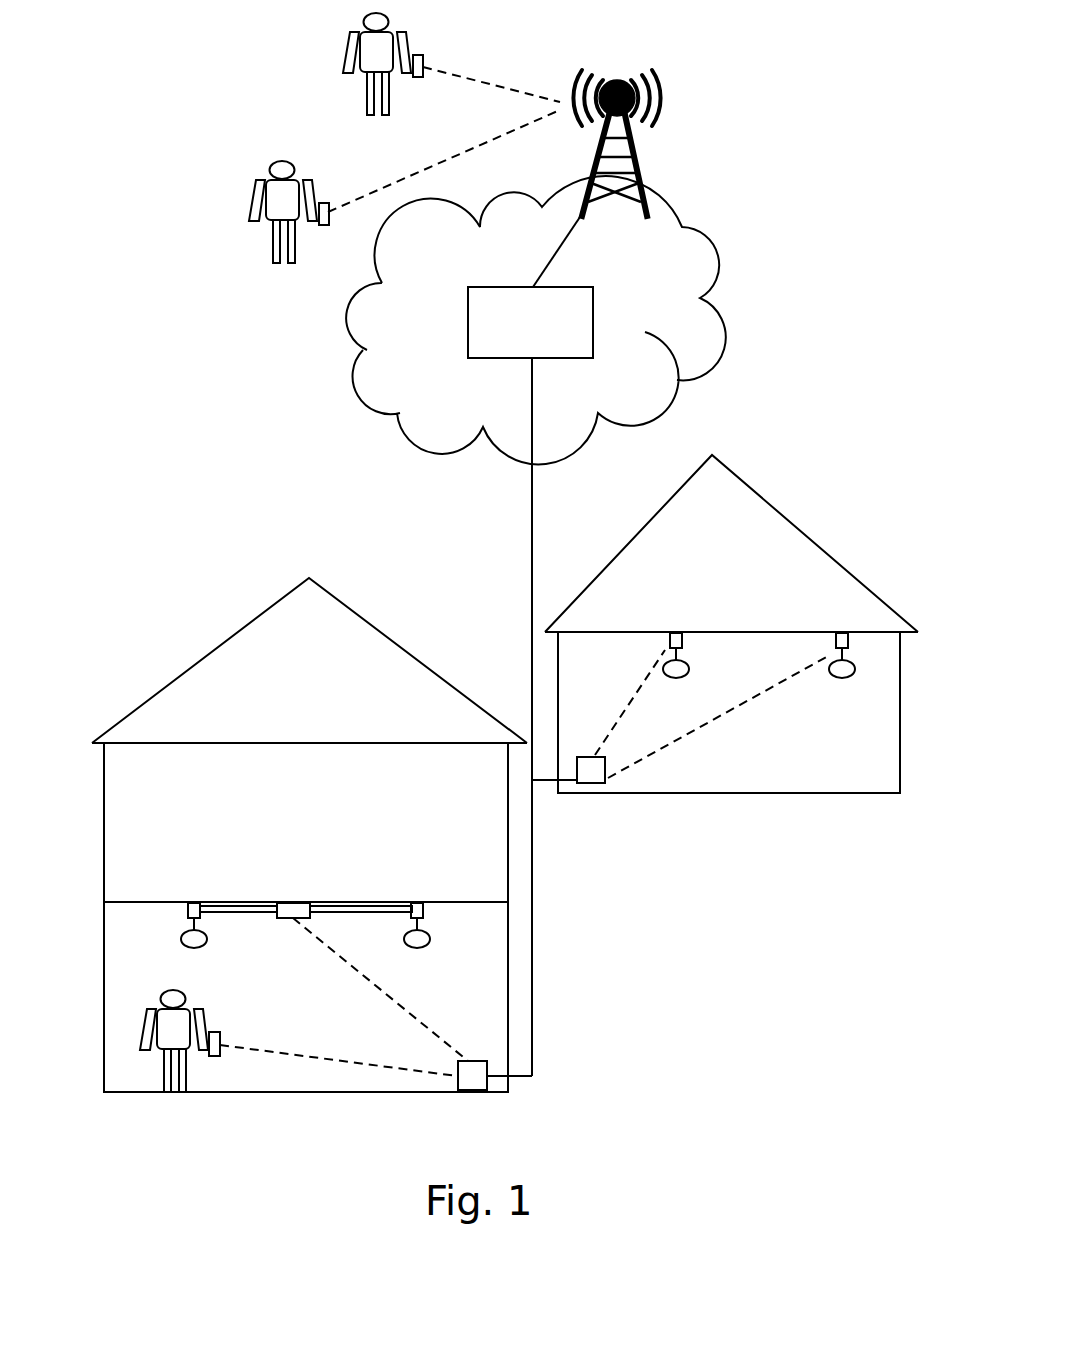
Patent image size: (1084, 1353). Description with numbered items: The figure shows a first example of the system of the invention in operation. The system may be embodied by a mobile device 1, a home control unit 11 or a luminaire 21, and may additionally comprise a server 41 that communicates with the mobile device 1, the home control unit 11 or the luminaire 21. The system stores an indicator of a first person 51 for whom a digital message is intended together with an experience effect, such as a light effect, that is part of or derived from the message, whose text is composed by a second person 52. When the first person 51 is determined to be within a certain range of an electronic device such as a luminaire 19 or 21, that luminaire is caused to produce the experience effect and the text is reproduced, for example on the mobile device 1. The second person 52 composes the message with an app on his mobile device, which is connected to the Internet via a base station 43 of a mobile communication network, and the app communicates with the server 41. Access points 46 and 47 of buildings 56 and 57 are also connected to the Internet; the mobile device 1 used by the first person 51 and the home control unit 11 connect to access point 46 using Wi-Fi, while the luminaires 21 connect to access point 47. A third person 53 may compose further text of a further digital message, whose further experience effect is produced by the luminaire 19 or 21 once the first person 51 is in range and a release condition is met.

The mobile device 1 is at (221, 1036).
The home control unit 11 is at (290, 900).
The luminaire 19 is at (190, 900).
The luminaire 21 is at (676, 632).
The server 41 is at (530, 322).
The base station 43 is at (637, 158).
The access point 46 is at (472, 1091).
The access point 47 is at (590, 793).
The first person 51 is at (140, 1050).
The second person 52 is at (360, 116).
The third person 53 is at (265, 266).
The building 56 is at (160, 690).
The building 57 is at (608, 560).